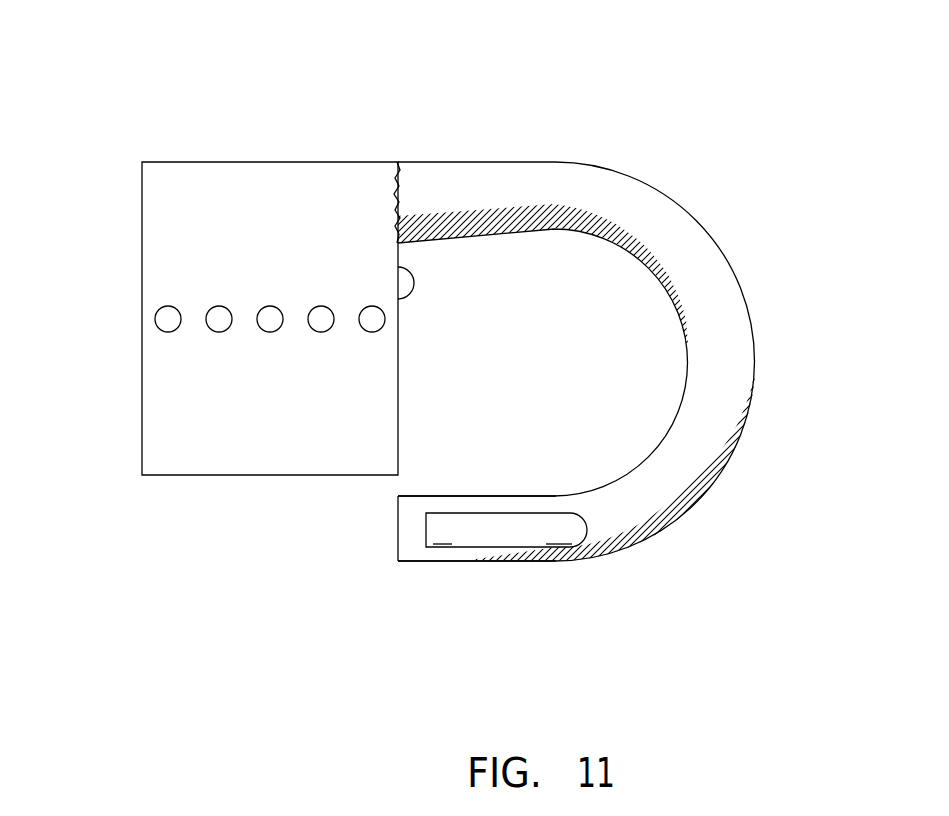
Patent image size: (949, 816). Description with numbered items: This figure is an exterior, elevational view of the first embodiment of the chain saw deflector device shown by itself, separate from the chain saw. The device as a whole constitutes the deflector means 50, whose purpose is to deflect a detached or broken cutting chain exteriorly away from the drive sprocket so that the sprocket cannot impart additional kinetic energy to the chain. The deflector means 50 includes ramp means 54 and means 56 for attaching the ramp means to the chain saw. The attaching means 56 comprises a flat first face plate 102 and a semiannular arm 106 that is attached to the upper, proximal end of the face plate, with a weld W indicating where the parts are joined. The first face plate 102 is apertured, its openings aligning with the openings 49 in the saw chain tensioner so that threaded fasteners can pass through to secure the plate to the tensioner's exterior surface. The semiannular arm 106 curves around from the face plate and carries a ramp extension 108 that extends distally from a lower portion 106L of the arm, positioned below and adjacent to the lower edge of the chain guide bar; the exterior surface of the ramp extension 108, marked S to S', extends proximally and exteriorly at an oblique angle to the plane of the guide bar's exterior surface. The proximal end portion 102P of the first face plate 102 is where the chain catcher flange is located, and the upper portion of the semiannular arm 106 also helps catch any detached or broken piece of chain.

The deflector means 50 is at (393, 34).
The means for attaching the ramp means 56 is at (125, 263).
The first face plate 102 is at (182, 203).
The proximal end portion of the first face plate 102P is at (398, 267).
The openings 49 is at (268, 332).
The ramp means 54 is at (356, 569).
The semiannular arm 106 is at (752, 360).
The weld W is at (393, 187).
The lower portion of the semiannular arm 106L is at (657, 532).
The ramp extension 108 is at (487, 530).